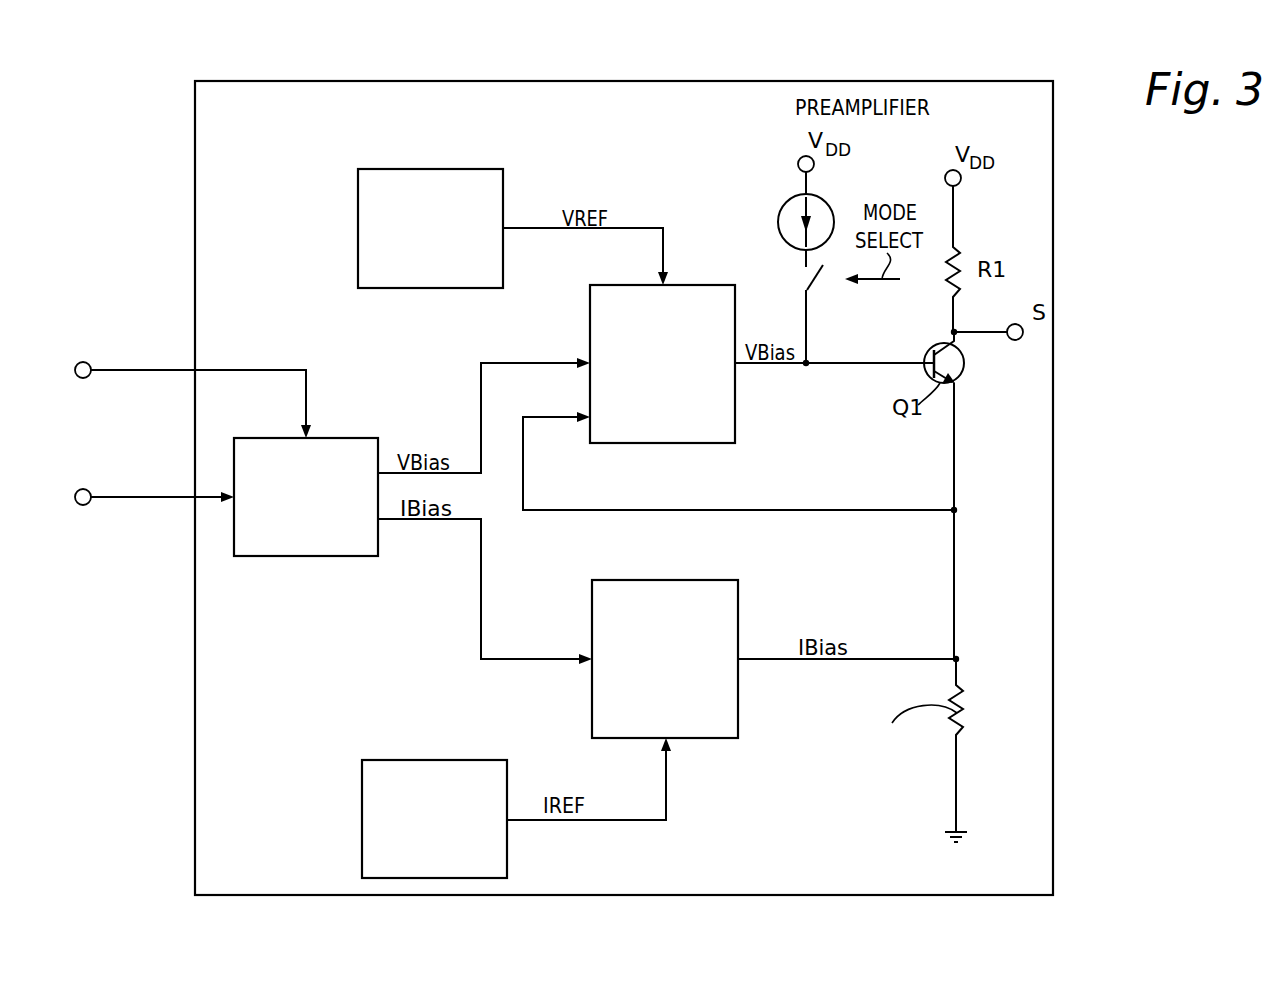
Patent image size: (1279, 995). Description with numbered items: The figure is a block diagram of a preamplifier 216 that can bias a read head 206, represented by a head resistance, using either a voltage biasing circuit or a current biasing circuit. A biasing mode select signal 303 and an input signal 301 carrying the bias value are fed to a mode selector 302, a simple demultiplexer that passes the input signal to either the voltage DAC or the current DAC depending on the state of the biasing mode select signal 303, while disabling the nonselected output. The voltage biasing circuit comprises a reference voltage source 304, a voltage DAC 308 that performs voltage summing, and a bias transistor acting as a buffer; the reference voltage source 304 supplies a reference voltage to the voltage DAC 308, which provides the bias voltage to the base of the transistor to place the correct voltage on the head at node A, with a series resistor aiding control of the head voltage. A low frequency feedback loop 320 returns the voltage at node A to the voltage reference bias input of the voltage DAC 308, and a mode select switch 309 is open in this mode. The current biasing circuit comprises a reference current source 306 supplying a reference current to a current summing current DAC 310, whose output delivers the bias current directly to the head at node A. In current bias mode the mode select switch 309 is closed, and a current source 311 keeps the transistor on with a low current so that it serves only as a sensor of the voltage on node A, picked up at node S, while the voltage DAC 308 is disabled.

The preamplifier 216 is at (555, 81).
The reference voltage source 304 is at (358, 185).
The voltage digital-to-analog-converter (DAC) 308 is at (590, 328).
The mode selector 302 is at (350, 438).
The biasing mode select signal 303 is at (95, 377).
The input signal 301 is at (98, 503).
The low frequency feedback loop 320 is at (565, 512).
The current digital-to-analog-converter (DAC) 310 is at (739, 600).
The reference current source 306 is at (450, 760).
The current source 311 is at (782, 205).
The mode select switch 309 is at (818, 282).
The read head 206 is at (1003, 703).